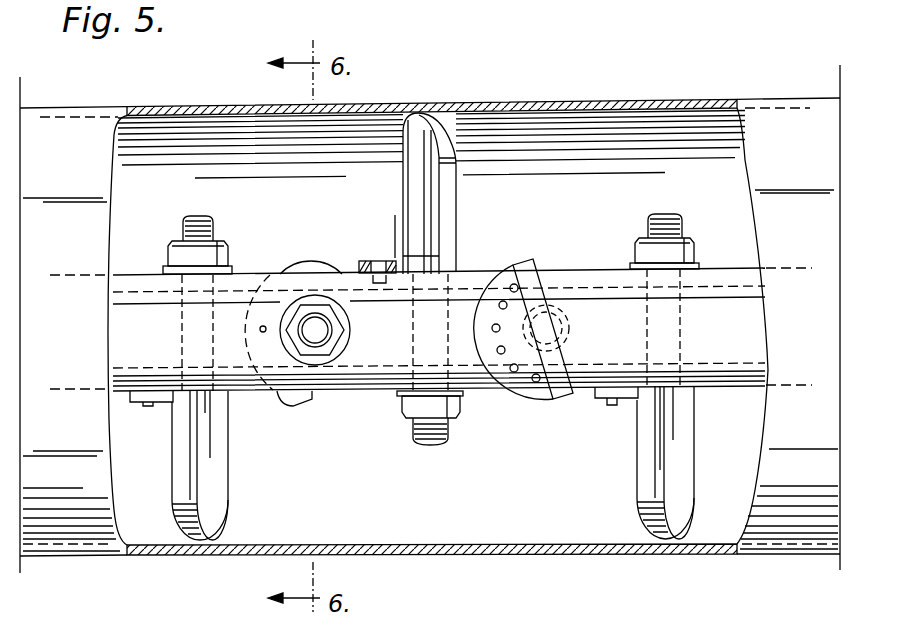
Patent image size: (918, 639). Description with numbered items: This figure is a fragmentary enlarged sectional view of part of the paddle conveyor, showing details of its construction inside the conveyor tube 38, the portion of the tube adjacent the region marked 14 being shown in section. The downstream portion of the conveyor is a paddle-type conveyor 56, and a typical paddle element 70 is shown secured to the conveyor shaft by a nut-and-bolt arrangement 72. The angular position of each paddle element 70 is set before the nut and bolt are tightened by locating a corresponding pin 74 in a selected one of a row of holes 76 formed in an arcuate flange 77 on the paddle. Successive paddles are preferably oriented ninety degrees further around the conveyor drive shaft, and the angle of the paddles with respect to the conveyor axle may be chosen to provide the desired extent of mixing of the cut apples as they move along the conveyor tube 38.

The pipe section 14 is at (100, 108).
The conveyor tube 38 is at (755, 98).
The paddle-type conveyor 56 is at (408, 110).
The paddle element 70 is at (456, 190).
The nut-and-bolt arrangement 72 is at (226, 241).
The pin 74 is at (257, 327).
The holes 76 is at (514, 372).
The arcuate flange 77 is at (395, 215).